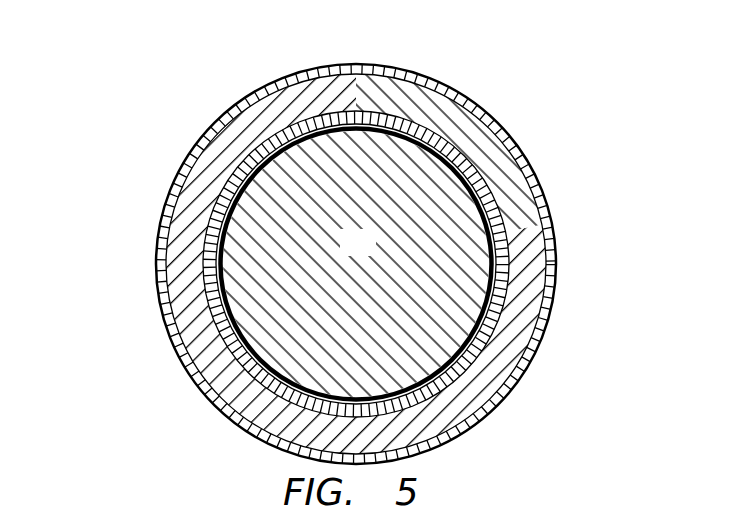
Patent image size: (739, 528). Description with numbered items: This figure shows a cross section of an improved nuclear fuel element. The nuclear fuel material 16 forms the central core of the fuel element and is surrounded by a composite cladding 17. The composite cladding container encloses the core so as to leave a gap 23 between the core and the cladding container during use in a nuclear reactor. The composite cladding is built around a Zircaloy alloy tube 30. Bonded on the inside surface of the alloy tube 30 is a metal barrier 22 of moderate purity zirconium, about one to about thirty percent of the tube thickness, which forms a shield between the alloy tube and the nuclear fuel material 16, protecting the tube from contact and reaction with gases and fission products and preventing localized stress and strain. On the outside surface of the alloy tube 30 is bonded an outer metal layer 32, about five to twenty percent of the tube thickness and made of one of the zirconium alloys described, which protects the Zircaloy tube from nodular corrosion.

The nuclear fuel material 16 is at (372, 253).
The composite cladding 17 is at (358, 264).
The metal barrier 22 is at (207, 267).
The gap 23 is at (503, 138).
The Zircaloy alloy tube 30 is at (535, 269).
The metal layer 32 is at (182, 357).